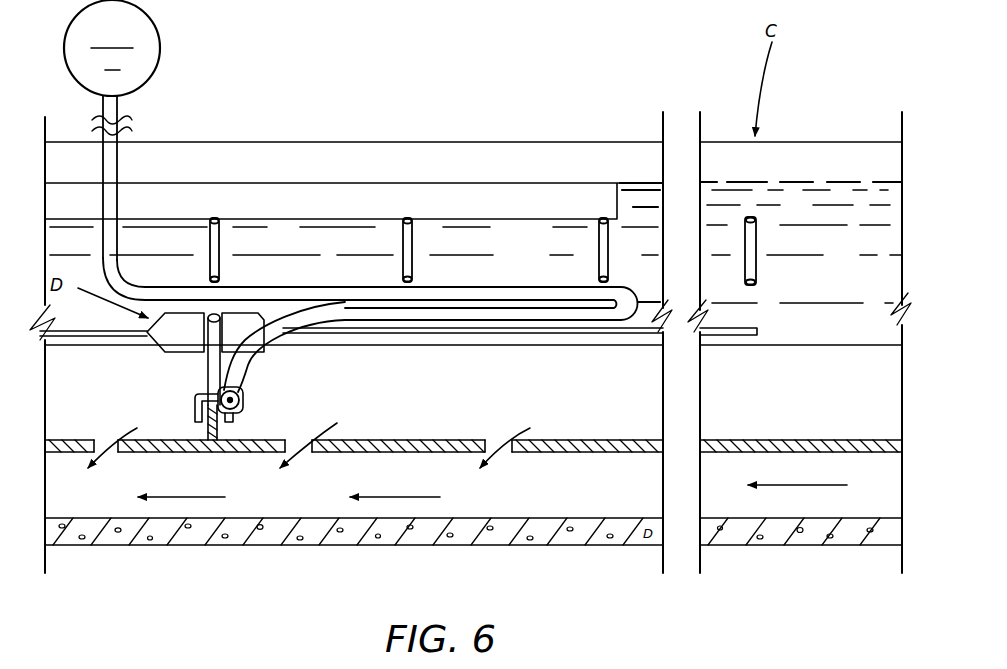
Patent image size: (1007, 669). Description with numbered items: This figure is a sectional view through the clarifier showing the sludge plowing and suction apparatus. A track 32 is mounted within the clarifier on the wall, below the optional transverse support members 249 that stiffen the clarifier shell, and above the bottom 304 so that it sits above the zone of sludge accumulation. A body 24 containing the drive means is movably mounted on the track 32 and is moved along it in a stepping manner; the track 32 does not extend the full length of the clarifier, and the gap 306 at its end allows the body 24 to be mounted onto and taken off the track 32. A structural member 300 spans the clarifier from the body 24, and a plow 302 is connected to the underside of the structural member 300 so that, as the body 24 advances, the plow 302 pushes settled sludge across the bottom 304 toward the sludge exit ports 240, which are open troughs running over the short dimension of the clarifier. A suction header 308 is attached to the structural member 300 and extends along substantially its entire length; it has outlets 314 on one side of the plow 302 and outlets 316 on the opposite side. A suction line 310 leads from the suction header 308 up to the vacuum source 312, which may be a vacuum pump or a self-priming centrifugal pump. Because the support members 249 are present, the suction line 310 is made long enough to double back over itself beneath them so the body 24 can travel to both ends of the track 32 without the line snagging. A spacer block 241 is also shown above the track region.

The vacuum source 312 is at (160, 33).
The suction line 310 is at (117, 173).
The transverse support member 249 is at (218, 243).
The spacer block 241 is at (368, 197).
The body 24 is at (242, 323).
The structural member 300 is at (208, 363).
The outlet 316 is at (193, 400).
The plow 302 is at (206, 433).
The suction header 308 is at (243, 388).
The outlet 314 is at (247, 410).
The track 32 is at (428, 338).
The gap 306 is at (822, 332).
The bottom 304 is at (589, 441).
The sludge exit port 240 is at (113, 452).